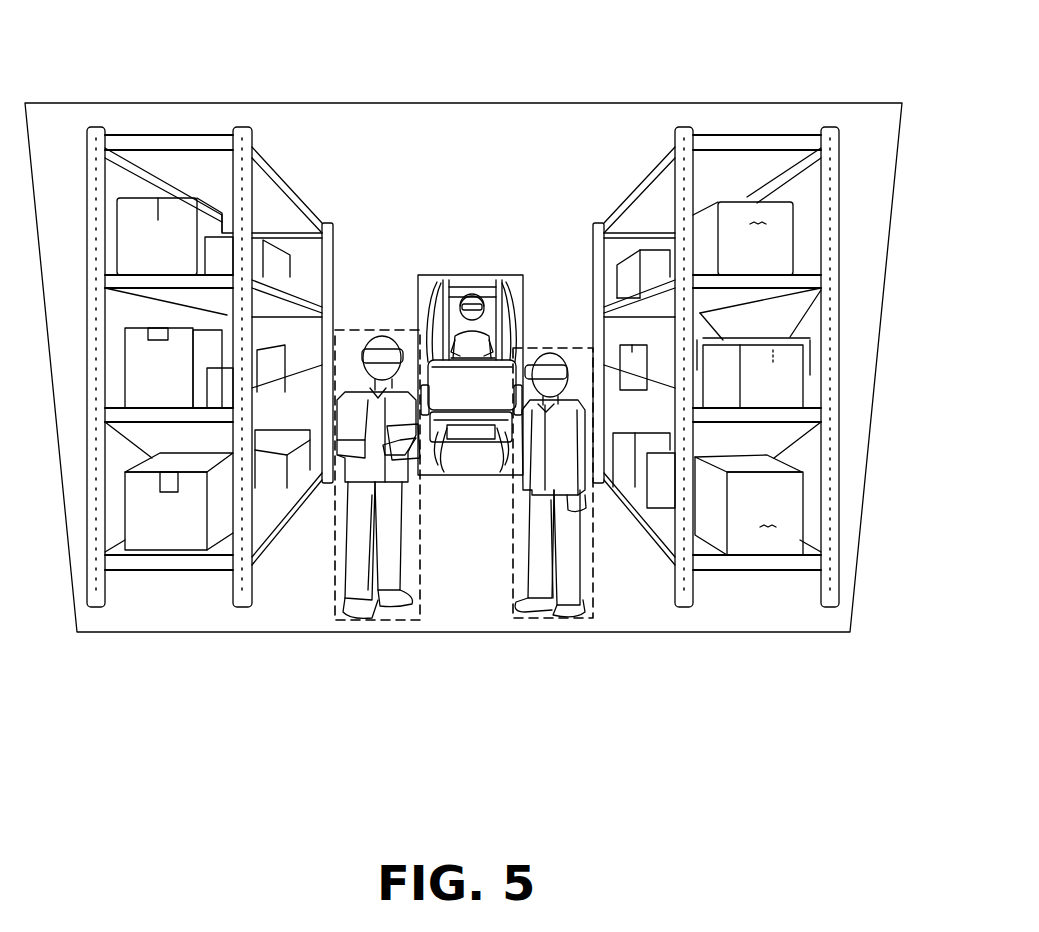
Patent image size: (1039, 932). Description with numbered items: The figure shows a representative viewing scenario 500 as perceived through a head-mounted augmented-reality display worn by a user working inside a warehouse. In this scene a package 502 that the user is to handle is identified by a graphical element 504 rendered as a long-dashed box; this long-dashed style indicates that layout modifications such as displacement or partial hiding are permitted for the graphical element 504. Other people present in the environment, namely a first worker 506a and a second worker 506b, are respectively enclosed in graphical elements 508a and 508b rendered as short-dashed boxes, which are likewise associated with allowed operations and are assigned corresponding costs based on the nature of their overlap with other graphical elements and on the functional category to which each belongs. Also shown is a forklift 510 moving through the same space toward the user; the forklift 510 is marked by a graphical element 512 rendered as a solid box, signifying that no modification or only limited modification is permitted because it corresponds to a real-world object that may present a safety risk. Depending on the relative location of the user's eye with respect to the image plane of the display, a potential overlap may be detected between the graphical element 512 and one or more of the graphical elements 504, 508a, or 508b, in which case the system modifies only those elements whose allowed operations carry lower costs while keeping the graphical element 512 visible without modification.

The viewing scenario 500 is at (463, 319).
The package 502 is at (819, 357).
The graphical element 504 is at (767, 367).
The first worker 506a is at (364, 530).
The second worker 506b is at (550, 530).
The graphical element 508a is at (311, 507).
The graphical element 508b is at (614, 518).
The forklift 510 is at (432, 268).
The graphical element 512 is at (534, 267).